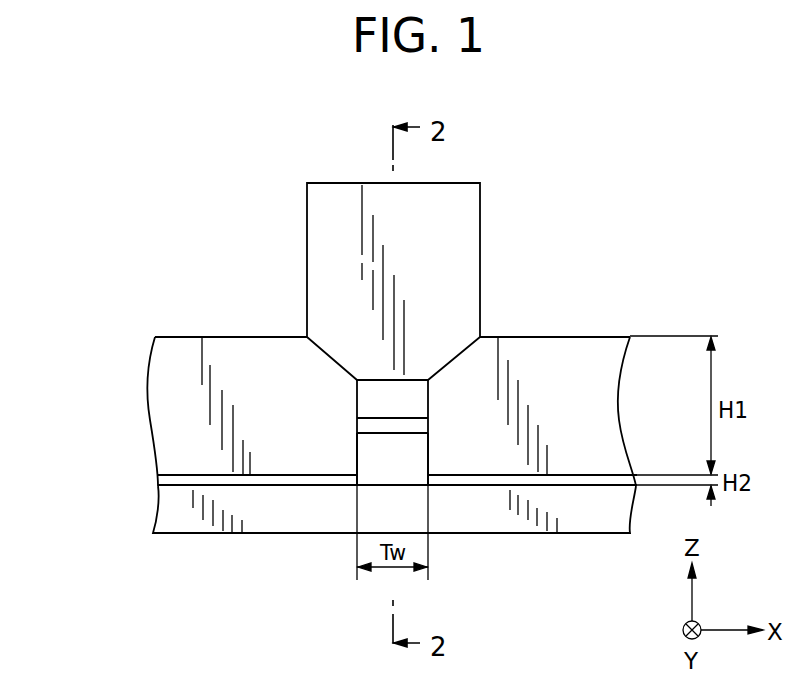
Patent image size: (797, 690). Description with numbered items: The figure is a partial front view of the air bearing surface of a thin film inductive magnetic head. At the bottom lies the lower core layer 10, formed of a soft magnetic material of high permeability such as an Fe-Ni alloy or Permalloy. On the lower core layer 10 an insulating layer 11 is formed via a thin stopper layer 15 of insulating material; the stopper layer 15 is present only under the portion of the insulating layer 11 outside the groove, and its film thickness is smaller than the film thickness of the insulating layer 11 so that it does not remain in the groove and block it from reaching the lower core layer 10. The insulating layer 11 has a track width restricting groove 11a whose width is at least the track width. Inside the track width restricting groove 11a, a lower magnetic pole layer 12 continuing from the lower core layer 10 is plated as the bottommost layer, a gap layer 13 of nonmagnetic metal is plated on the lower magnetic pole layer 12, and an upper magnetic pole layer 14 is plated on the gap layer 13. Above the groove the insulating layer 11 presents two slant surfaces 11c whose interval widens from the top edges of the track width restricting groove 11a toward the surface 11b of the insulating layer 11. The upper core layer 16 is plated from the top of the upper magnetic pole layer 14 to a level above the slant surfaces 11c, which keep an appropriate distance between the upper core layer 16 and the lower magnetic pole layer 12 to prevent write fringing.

The lower core layer 10 is at (580, 508).
The insulating layer 11 is at (178, 424).
The track width restricting groove 11a is at (383, 463).
The surface of the insulating layer 11b is at (197, 337).
The slant surfaces 11c is at (322, 352).
The lower magnetic pole layer 12 is at (420, 452).
The gap layer 13 is at (370, 425).
The upper magnetic pole layer 14 is at (367, 405).
The stopper layer 15 is at (175, 477).
The upper core layer 16 is at (462, 212).